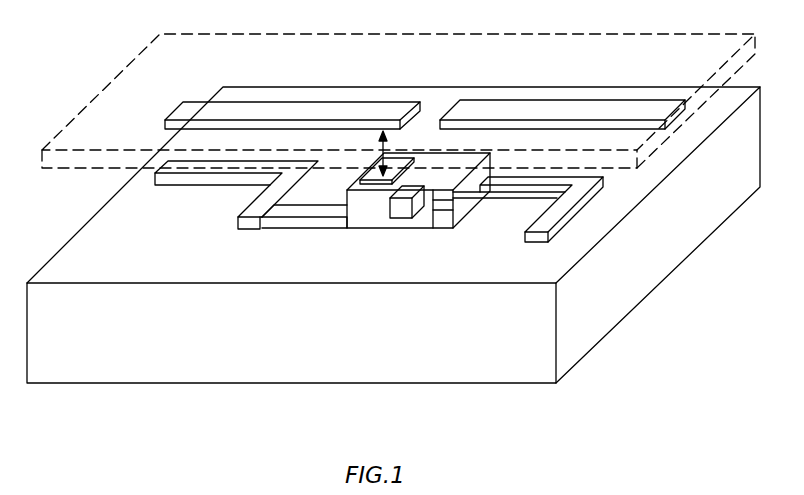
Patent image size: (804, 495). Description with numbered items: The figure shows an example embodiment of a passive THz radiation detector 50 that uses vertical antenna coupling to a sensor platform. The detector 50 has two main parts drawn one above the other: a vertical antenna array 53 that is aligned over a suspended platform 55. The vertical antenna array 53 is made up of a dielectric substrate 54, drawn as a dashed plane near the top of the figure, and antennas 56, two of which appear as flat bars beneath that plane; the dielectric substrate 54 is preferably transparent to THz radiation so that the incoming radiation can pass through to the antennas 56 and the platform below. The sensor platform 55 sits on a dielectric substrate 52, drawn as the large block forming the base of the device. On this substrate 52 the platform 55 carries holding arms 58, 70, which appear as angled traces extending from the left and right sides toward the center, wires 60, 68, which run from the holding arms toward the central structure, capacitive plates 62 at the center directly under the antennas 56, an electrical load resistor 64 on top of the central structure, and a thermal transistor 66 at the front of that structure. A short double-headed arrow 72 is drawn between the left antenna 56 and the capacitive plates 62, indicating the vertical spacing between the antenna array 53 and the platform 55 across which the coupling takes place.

The detector 50 is at (147, 394).
The dielectric substrate 52 is at (270, 357).
The vertical antenna array 53 is at (98, 88).
The dielectric substrate 54 is at (172, 47).
The suspended platform 55 is at (90, 215).
The antennas 56 is at (297, 108).
The holding arm 58 is at (211, 189).
The wire 60 is at (371, 216).
The capacitive plates 62 is at (400, 163).
The electrical load resistor 64 is at (430, 160).
The thermal transistor 66 is at (433, 201).
The wire 68 is at (520, 195).
The holding arm 70 is at (603, 193).
The direction of motion 72 is at (381, 148).